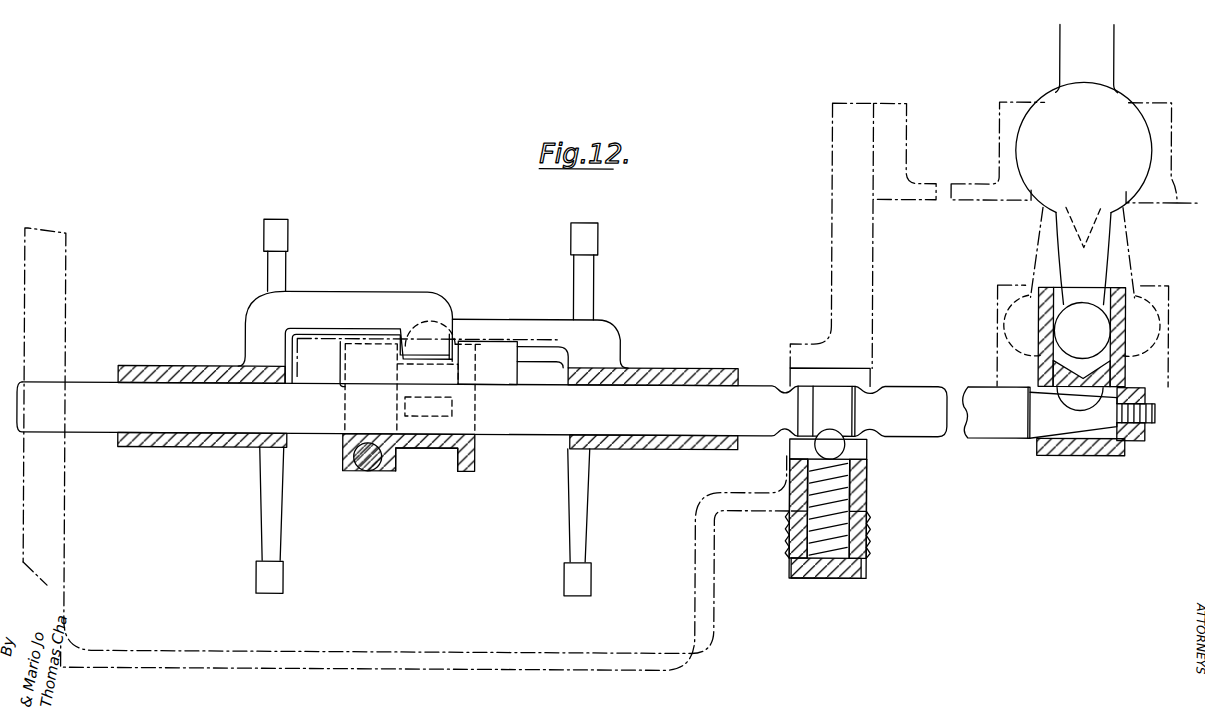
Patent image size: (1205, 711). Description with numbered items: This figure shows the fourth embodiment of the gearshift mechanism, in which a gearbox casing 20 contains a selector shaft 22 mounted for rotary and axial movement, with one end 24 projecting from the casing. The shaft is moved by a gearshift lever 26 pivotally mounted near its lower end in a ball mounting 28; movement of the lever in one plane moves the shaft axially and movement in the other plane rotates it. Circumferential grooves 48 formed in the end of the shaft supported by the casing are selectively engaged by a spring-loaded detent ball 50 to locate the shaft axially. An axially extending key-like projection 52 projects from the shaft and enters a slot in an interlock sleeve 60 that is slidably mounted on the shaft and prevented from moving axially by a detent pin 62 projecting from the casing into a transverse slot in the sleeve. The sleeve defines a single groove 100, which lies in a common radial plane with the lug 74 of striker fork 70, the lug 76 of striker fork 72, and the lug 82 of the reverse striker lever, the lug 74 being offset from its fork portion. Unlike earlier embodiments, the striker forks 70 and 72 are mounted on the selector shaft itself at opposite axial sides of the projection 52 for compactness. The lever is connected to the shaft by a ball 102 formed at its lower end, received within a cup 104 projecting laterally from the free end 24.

The gearbox casing 20 is at (703, 625).
The selector shaft 22 is at (647, 440).
The end of selector shaft 24 is at (917, 428).
The gearshift lever 26 is at (1072, 40).
The ball mounting 28 is at (1055, 105).
The circumferential grooves 48 is at (838, 413).
The detent ball 50 is at (815, 450).
The axially extending key-like projection 52 is at (495, 350).
The interlock sleeve 60 is at (345, 472).
The detent pin 62 is at (367, 474).
The striker fork 70 is at (262, 238).
The striker fork 72 is at (570, 238).
The lug 74 is at (425, 352).
The lug 76 is at (455, 343).
The lug 82 is at (475, 447).
The single groove 100 is at (433, 471).
The ball 102 is at (1078, 322).
The cup 104 is at (1085, 378).